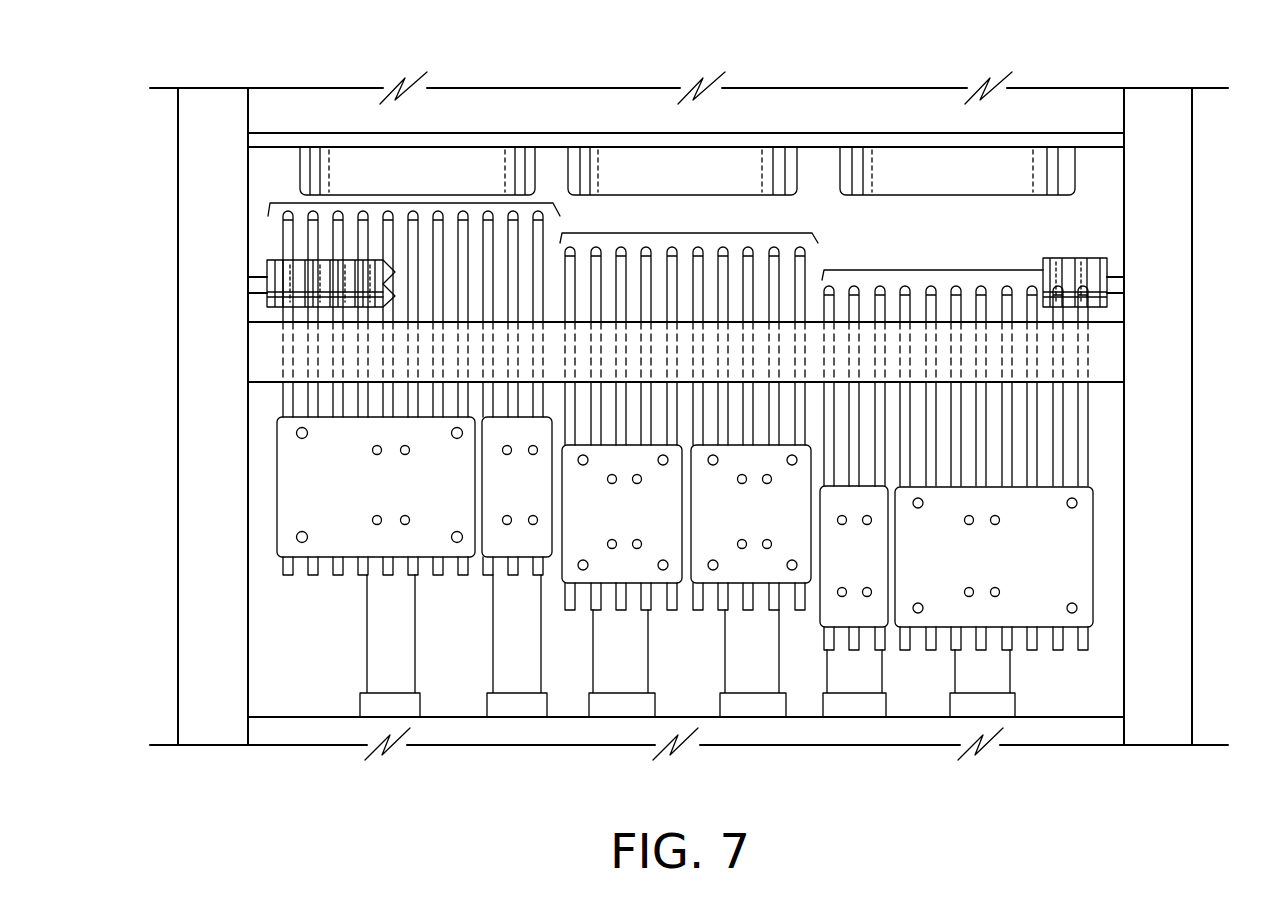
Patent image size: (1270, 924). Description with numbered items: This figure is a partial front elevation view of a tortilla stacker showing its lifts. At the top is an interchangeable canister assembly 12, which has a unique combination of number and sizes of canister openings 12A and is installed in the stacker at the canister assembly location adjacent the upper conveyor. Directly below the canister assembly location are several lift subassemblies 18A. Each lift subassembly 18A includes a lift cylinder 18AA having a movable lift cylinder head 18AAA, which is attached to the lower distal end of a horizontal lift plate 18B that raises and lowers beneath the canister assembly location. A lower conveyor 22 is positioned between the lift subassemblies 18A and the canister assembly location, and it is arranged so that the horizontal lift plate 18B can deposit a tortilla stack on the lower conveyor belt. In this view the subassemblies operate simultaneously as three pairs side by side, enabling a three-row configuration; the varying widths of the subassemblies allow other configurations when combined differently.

The canister assembly 12 is at (1082, 140).
The canister opening 12A is at (1053, 200).
The horizontal lift plate 18B is at (288, 203).
The lower conveyor 22 is at (287, 277).
The lift cylinder head 18AAA is at (1197, 590).
The lift subassembly 18A is at (325, 545).
The lift cylinder 18AA is at (388, 675).